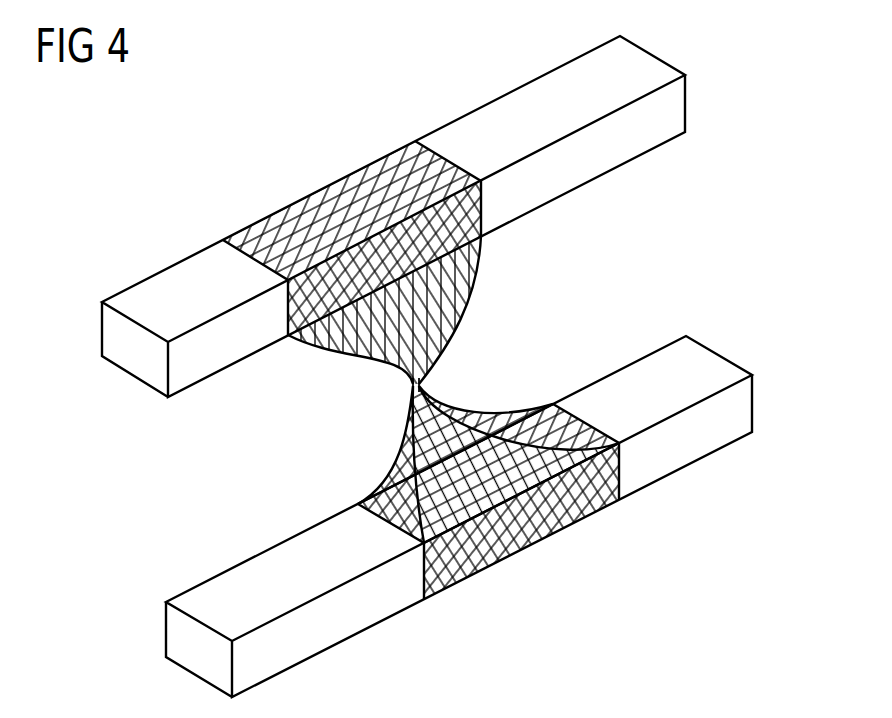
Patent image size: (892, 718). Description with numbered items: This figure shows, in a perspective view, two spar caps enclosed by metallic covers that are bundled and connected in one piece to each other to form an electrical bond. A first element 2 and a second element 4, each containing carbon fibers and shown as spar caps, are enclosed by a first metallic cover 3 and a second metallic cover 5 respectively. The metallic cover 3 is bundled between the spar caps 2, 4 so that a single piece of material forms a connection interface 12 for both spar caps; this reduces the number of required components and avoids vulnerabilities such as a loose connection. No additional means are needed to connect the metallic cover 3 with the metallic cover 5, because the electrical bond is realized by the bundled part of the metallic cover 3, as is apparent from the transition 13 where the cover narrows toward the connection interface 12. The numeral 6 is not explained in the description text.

The first element 2 is at (687, 100).
The first metallic cover 3 is at (318, 190).
The second element 4 is at (753, 405).
The second metallic cover 5 is at (550, 532).
The contact point 6 is at (420, 388).
The connection interface 12 is at (420, 388).
The transition 13 is at (455, 305).